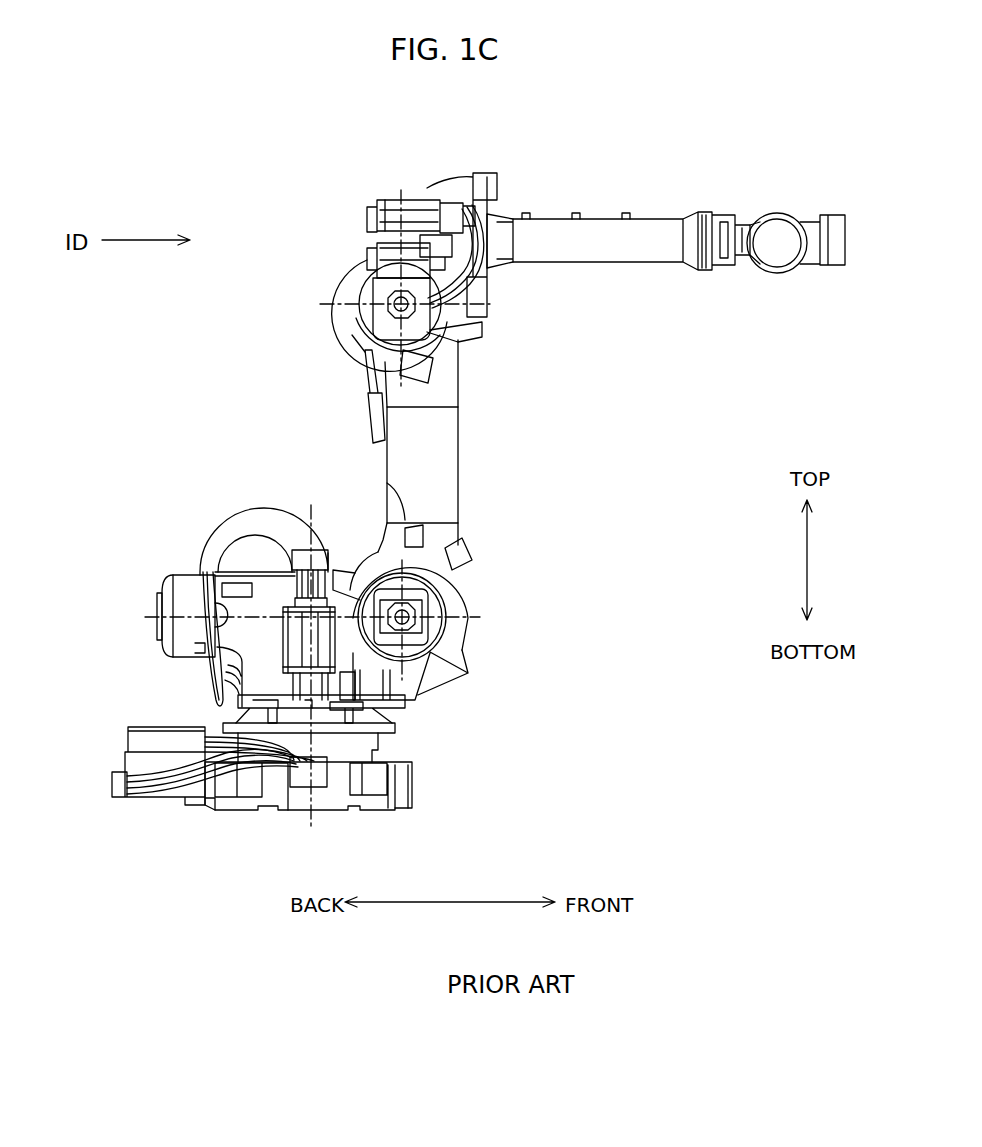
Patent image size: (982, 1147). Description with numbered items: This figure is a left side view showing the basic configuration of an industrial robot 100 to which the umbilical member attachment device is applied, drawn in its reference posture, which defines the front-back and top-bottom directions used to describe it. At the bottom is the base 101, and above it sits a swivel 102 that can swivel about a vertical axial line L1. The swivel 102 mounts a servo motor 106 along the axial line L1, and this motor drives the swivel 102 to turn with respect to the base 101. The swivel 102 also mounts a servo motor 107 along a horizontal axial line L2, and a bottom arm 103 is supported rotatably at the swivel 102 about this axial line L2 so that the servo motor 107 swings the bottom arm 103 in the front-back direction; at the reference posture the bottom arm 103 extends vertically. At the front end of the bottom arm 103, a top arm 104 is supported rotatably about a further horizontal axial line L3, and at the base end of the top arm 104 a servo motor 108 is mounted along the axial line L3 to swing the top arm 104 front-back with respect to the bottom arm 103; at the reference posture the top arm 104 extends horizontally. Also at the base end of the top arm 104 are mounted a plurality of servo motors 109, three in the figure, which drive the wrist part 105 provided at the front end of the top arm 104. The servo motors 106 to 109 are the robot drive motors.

The robot 100 is at (238, 190).
The base 101 is at (410, 781).
The swivel 102 is at (255, 668).
The bottom arm 103 is at (460, 445).
The top arm 104 is at (597, 217).
The wrist part 105 is at (803, 210).
The servo motor 106 is at (283, 648).
The servo motor 107 is at (420, 612).
The servo motor 108 is at (342, 284).
The servo motors 109 is at (384, 196).
The axial line L1 is at (311, 681).
The axial line L2 is at (455, 627).
The axial line L3 is at (326, 316).